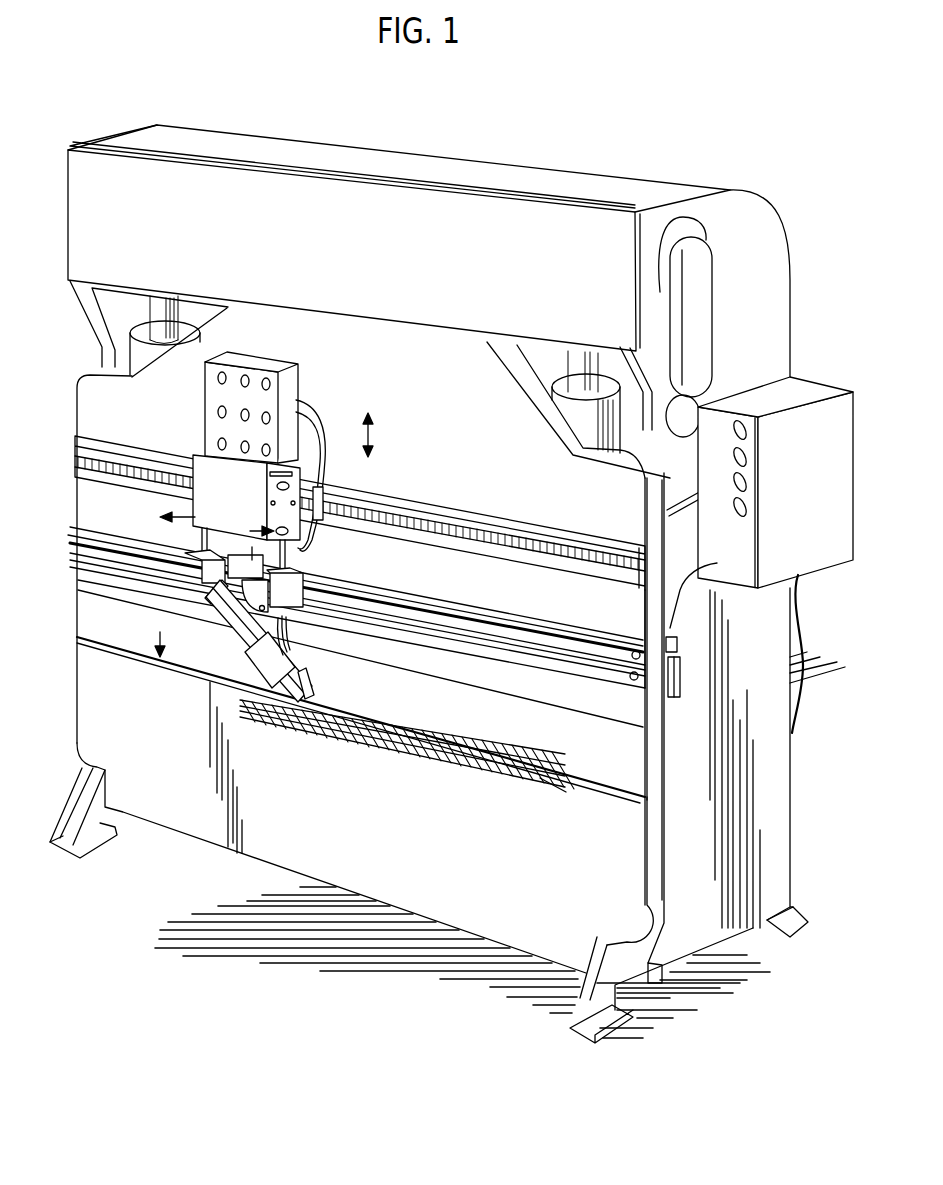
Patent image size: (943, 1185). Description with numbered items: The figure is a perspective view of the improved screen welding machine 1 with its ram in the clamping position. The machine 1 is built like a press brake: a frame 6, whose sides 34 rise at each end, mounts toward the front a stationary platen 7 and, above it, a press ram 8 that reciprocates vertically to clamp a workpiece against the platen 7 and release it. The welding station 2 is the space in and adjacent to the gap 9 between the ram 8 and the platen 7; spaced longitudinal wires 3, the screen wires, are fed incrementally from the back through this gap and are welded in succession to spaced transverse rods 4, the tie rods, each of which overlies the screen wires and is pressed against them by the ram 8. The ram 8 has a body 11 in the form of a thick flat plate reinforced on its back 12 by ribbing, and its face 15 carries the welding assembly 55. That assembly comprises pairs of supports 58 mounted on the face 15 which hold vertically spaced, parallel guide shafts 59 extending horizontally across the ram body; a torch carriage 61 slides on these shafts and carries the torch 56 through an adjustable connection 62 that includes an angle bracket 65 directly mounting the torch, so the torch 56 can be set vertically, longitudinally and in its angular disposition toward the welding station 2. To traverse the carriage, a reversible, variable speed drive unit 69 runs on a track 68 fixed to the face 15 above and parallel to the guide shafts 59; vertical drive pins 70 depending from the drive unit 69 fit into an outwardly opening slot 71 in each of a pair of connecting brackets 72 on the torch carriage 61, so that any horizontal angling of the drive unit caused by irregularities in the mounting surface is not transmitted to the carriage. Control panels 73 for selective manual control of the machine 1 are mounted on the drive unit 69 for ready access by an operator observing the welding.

The screen welding machine 1 is at (664, 171).
The welding station 2 is at (154, 636).
The longitudinal wires 3 is at (450, 767).
The transverse rods 4 is at (553, 777).
The frame 6 is at (791, 852).
The platen 7 is at (474, 856).
The press ram 8 is at (668, 630).
The gap 9 is at (78, 637).
The body 11 is at (653, 582).
The back 12 is at (666, 577).
The face 15 is at (476, 598).
The sides 34 is at (770, 705).
The welding assembly 55 is at (243, 653).
The torch 56 is at (270, 667).
The supports 58 is at (553, 643).
The guide shafts 59 is at (410, 625).
The torch carriage 61 is at (314, 571).
The connection 62 is at (303, 653).
The angle bracket 65 is at (305, 686).
The track 68 is at (493, 513).
The drive unit 69 is at (192, 462).
The drive pins 70 is at (248, 537).
The slot 71 is at (190, 551).
The connecting brackets 72 is at (205, 578).
The control panels 73 is at (203, 397).